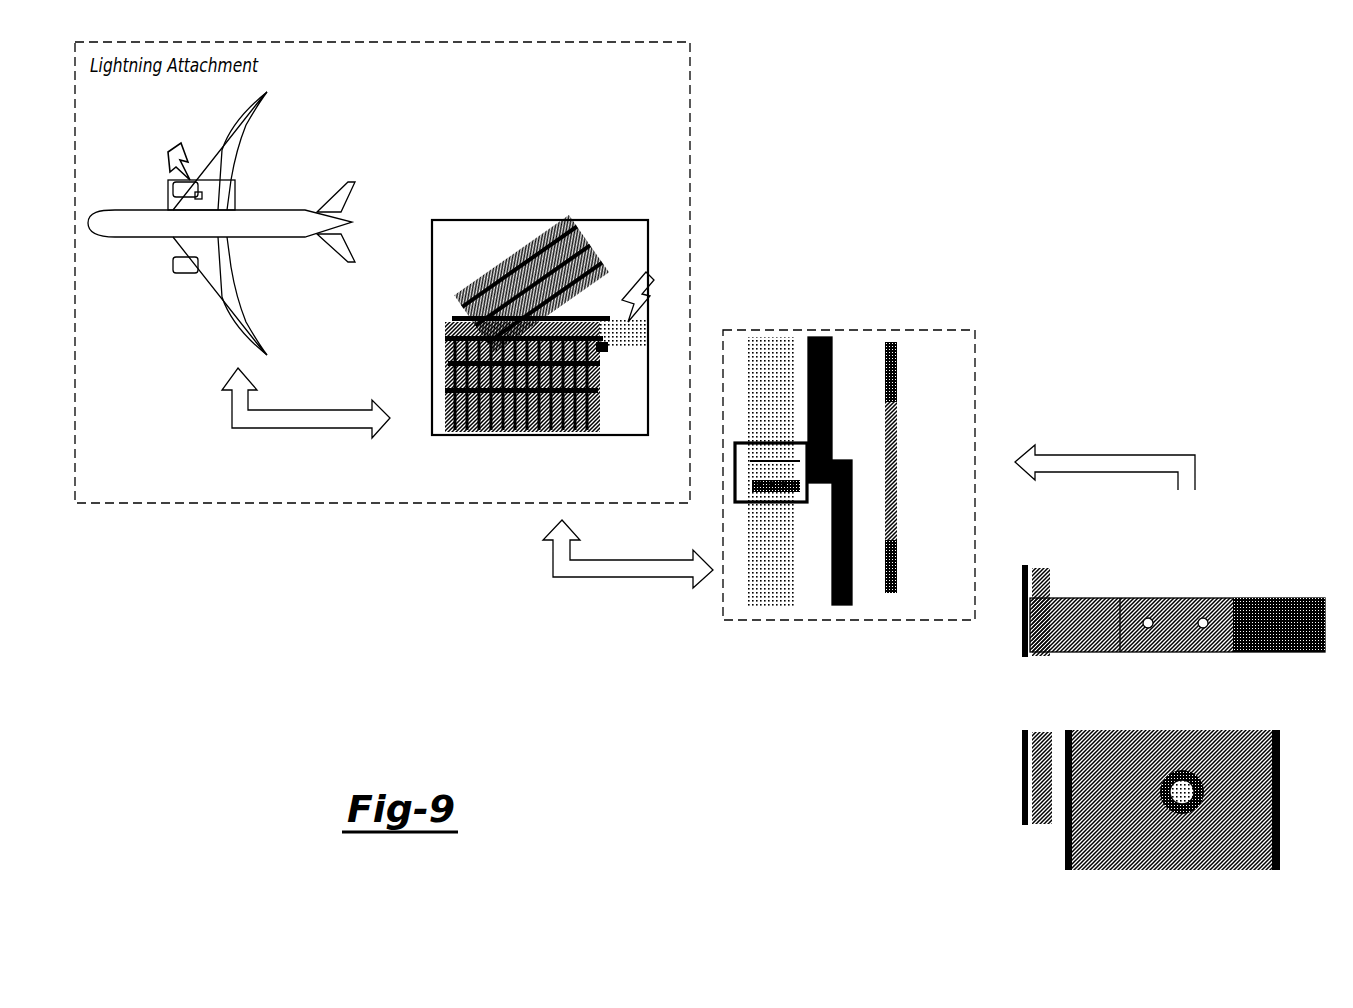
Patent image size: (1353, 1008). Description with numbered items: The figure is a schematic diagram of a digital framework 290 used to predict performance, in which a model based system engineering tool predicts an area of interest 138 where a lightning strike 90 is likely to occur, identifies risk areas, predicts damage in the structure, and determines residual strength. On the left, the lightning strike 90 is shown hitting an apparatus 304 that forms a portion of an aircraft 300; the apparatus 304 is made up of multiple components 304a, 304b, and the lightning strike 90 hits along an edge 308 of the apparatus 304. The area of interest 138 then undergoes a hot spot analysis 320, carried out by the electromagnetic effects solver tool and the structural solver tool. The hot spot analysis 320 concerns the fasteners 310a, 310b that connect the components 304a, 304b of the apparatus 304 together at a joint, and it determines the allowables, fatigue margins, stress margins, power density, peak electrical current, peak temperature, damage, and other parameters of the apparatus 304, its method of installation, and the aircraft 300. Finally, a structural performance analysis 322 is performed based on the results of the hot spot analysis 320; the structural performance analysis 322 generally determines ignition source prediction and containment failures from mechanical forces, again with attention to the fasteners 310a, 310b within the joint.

The digital framework 290 is at (875, 50).
The lightning strike 90 is at (197, 194).
The area of interest 138 is at (195, 195).
The apparatus 304 is at (237, 192).
The aircraft 300 is at (208, 293).
The first component 304a is at (430, 362).
The second component 304b is at (430, 289).
The edge 308 is at (614, 333).
The hot spot analysis 320 is at (855, 456).
The first fastener 310a is at (758, 474).
The second fastener 310b is at (781, 475).
The structural performance analysis 322 is at (1173, 693).